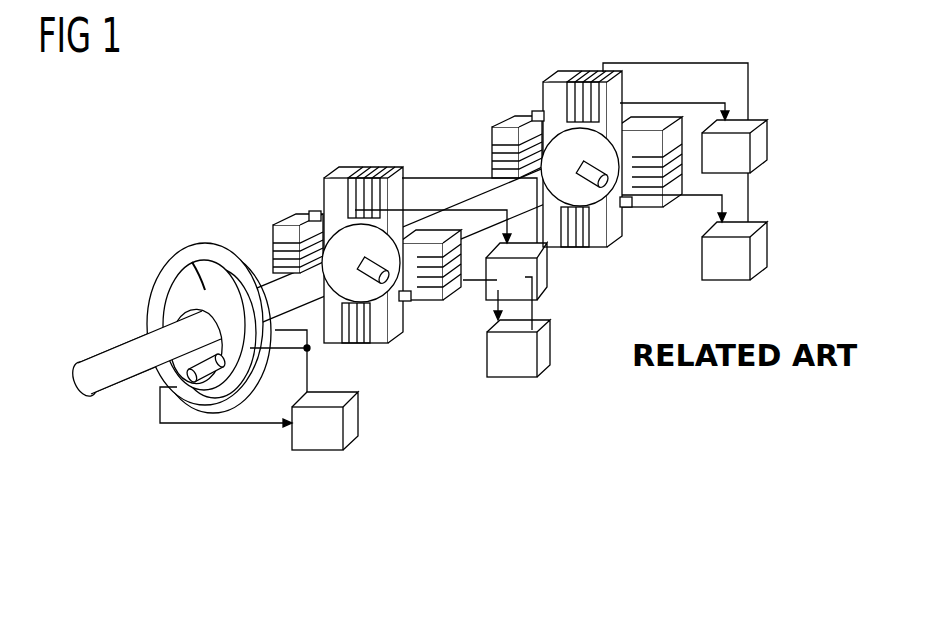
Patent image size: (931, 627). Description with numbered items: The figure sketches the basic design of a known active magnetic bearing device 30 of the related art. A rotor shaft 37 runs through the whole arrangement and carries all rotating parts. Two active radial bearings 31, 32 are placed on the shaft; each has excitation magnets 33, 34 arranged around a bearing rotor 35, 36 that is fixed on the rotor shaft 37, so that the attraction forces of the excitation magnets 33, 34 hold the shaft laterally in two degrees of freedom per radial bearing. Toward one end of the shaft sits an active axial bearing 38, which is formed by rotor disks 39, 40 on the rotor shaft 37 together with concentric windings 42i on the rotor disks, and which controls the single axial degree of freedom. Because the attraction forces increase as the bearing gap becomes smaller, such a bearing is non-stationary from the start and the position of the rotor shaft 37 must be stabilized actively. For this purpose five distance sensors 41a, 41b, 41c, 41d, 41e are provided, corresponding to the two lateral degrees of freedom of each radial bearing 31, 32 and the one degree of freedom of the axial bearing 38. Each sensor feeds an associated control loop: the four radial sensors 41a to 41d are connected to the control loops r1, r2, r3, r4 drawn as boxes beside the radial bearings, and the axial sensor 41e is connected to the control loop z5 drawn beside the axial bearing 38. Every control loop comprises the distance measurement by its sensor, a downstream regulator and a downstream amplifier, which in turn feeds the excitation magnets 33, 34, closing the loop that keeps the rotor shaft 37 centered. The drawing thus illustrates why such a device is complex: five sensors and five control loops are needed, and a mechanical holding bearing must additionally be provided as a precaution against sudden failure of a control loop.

The bearing device 30 is at (516, 463).
The active radial bearing 31 is at (603, 44).
The active radial bearing 32 is at (380, 140).
The excitation magnet 33 is at (497, 128).
The excitation magnet 34 is at (277, 230).
The bearing rotor 35 is at (597, 200).
The bearing rotor 36 is at (400, 302).
The rotor shaft 37 is at (88, 383).
The active axial bearing 38 is at (140, 246).
The rotor disk 39 is at (157, 285).
The rotor disk 40 is at (233, 263).
The distance sensor 41a is at (627, 207).
The distance sensor 41b is at (543, 117).
The distance sensor 41c is at (403, 300).
The distance sensor 41d is at (312, 215).
The distance sensor 41e is at (220, 373).
The concentric windings 42i is at (200, 283).
The control loop r1 is at (734, 146).
The control loop r2 is at (734, 251).
The control loop r3 is at (516, 271).
The control loop r4 is at (518, 348).
The control loop z5 is at (325, 421).